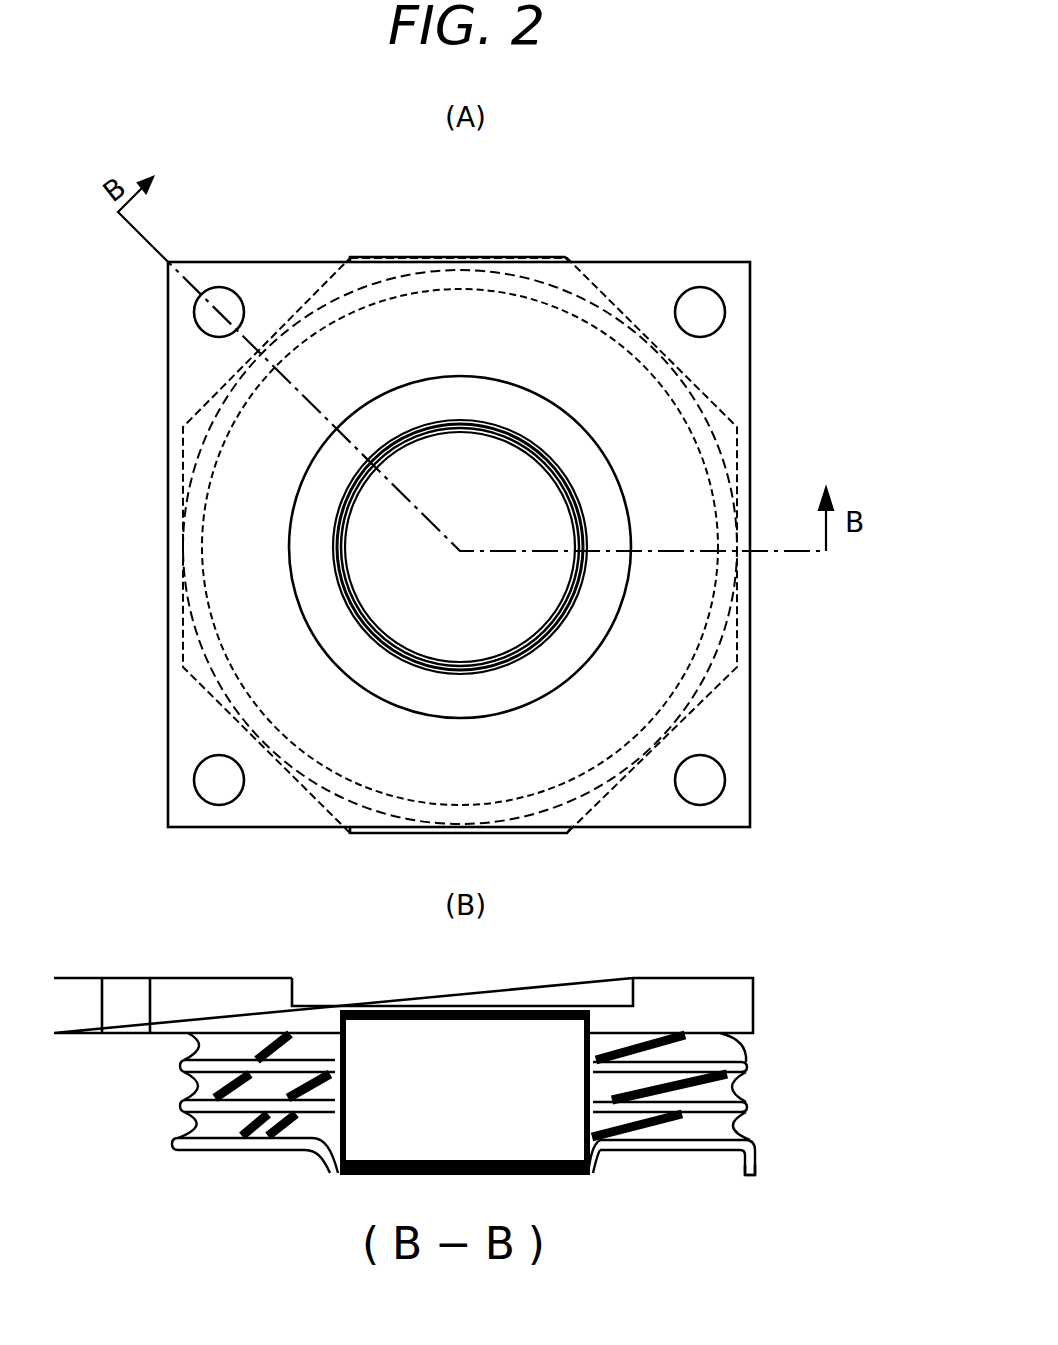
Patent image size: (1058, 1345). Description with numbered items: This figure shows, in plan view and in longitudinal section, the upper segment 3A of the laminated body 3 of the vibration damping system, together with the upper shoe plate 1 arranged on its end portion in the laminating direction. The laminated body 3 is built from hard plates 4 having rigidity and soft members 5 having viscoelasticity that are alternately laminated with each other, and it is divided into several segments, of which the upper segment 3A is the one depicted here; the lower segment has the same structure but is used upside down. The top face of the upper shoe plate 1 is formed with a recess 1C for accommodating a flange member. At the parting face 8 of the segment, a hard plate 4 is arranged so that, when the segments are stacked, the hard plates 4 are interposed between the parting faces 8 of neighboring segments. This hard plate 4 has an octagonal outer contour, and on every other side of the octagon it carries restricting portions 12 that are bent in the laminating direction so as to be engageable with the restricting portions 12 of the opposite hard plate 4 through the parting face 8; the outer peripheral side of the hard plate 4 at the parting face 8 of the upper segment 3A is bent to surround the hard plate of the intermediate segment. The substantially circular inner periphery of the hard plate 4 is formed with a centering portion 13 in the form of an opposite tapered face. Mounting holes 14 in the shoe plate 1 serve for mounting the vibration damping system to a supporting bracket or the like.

The upper shoe plate 1 is at (725, 380).
The recess 1C is at (613, 577).
The laminated body 3 is at (683, 492).
The upper segment 3A is at (772, 1032).
The hard plate 4 is at (277, 1038).
The soft member 5 is at (278, 1082).
The parting face 8 is at (668, 1152).
The restricting portion 12 is at (532, 257).
The centering portion 13 is at (338, 1170).
The mounting hole 14 is at (213, 780).